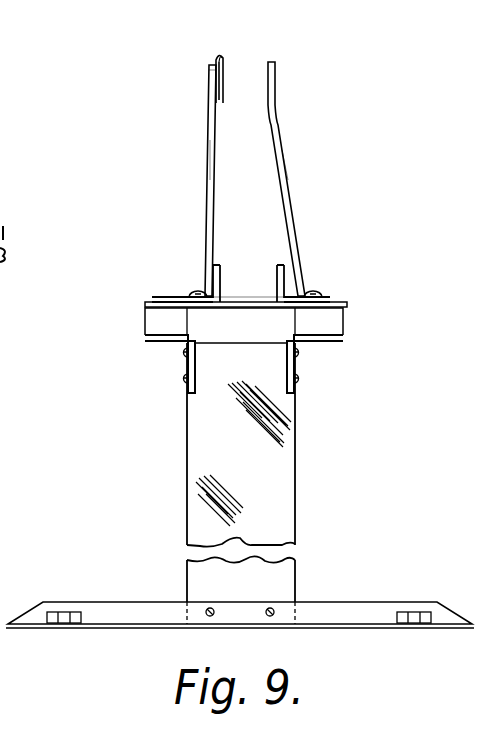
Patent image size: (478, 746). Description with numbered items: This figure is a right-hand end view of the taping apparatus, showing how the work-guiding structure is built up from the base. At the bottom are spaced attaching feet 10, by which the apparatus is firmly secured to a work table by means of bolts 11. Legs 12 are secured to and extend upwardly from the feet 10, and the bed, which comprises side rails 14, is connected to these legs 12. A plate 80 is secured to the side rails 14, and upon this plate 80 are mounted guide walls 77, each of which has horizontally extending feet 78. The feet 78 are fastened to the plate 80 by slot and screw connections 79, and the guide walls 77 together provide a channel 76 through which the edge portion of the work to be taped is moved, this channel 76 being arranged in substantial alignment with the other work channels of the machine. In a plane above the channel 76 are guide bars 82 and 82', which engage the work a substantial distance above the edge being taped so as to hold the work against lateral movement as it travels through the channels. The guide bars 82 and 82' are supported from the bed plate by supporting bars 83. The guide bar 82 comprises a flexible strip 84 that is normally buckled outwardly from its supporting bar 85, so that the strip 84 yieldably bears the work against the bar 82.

The attaching feet 10 is at (361, 609).
The bolts 11 is at (66, 616).
The legs 12 is at (259, 499).
The side rails 14 is at (150, 340).
The channel 76 is at (251, 275).
The guide walls 77 is at (212, 290).
The feet 78 is at (156, 301).
The slot and screw connections 79 is at (196, 293).
The plate 80 is at (344, 308).
The guide bar 82 is at (260, 179).
The guide bar 82' is at (193, 75).
The supporting bars 83 is at (208, 152).
The flexible strip 84 is at (223, 68).
The supporting bar 85 is at (216, 62).